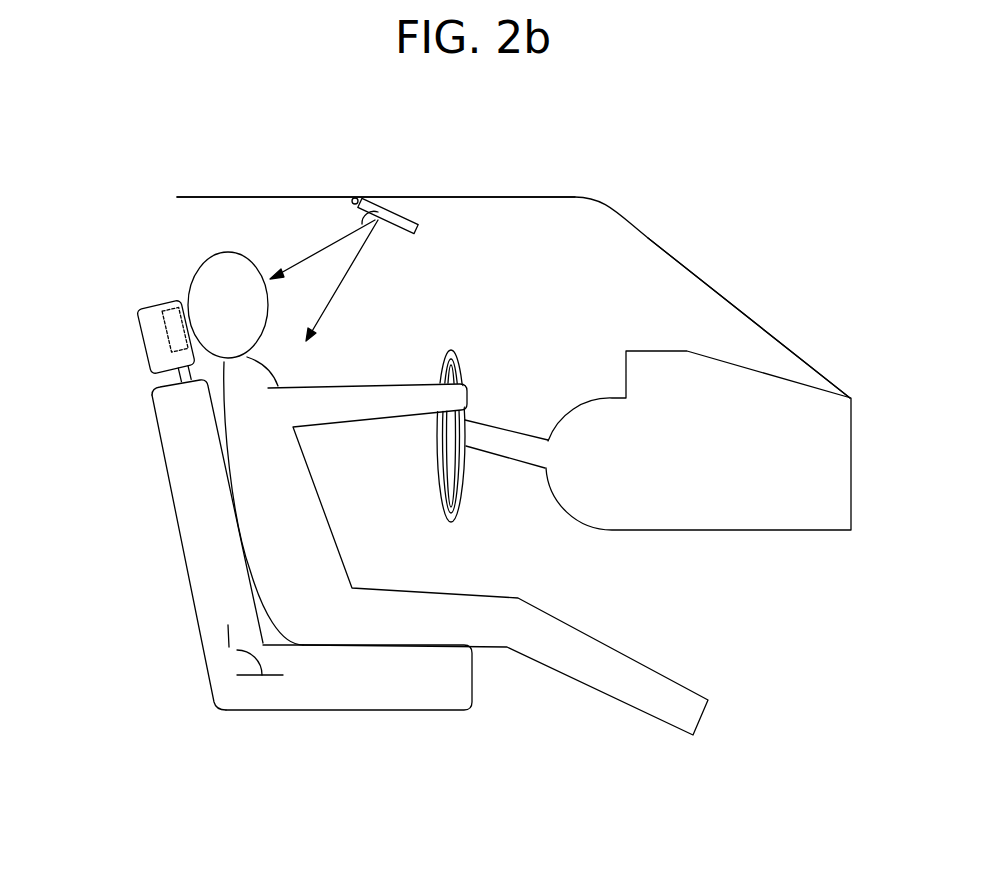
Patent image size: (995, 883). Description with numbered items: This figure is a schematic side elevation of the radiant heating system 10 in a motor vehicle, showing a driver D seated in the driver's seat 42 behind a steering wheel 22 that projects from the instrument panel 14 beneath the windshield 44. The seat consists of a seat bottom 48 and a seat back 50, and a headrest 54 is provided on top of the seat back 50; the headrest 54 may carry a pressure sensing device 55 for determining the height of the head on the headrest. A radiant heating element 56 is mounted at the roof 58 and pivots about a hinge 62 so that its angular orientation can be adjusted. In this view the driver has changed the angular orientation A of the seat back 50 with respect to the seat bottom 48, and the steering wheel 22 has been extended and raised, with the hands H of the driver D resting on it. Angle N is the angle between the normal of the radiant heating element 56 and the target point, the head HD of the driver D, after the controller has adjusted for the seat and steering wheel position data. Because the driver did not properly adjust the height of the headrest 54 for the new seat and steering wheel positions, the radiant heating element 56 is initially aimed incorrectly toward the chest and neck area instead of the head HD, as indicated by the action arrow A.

The radiant heating system 10 is at (427, 175).
The instrument panel 14 is at (690, 503).
The steering wheel 22 is at (443, 487).
The driver's seat 42 is at (257, 518).
The windshield 44 is at (712, 272).
The seat bottom 48 is at (365, 695).
The seat back 50 is at (218, 563).
The headrest 54 is at (120, 330).
The pressure sensing device 55 is at (163, 302).
The radiant heating element 56 is at (413, 216).
The roof 58 is at (265, 197).
The hinge 62 is at (355, 197).
The head HD is at (205, 283).
The angle N is at (352, 216).
The angular orientation A is at (335, 297).
The driver D is at (267, 393).
The hands H is at (462, 392).